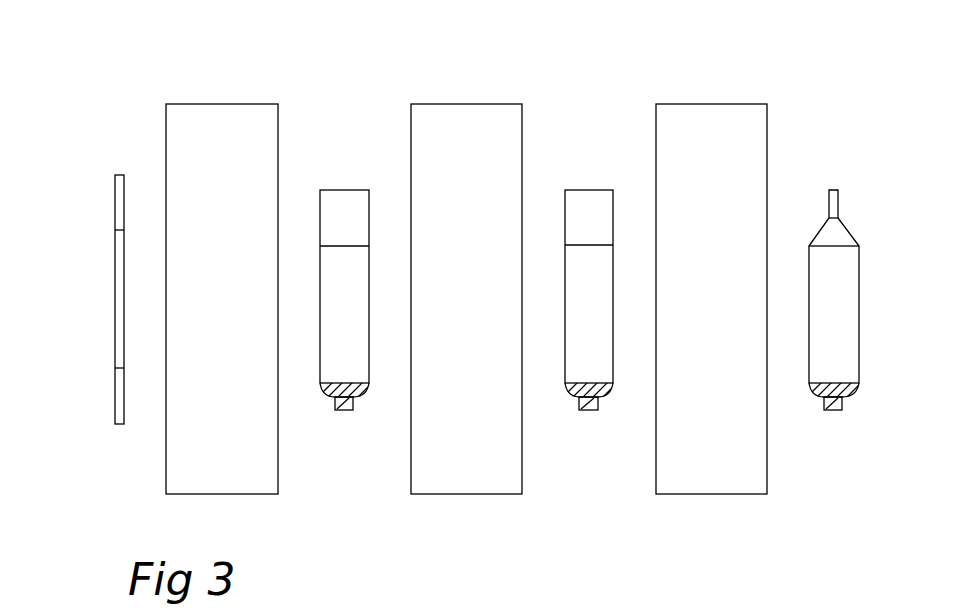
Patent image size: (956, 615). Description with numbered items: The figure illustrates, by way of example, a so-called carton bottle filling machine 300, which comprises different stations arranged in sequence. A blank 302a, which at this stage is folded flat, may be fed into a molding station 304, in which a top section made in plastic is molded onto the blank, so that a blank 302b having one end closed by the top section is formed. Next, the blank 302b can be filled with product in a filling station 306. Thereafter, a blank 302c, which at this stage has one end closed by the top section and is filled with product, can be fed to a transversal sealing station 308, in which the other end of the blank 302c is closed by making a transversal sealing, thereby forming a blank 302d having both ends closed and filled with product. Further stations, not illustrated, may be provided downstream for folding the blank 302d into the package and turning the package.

The carton bottle filling machine 300 is at (148, 86).
The blank 302a is at (113, 403).
The blank 302b is at (323, 398).
The blank 302c is at (568, 398).
The blank 302d is at (815, 398).
The molding station 304 is at (244, 311).
The filling station 306 is at (488, 311).
The transversal sealing station 308 is at (733, 311).